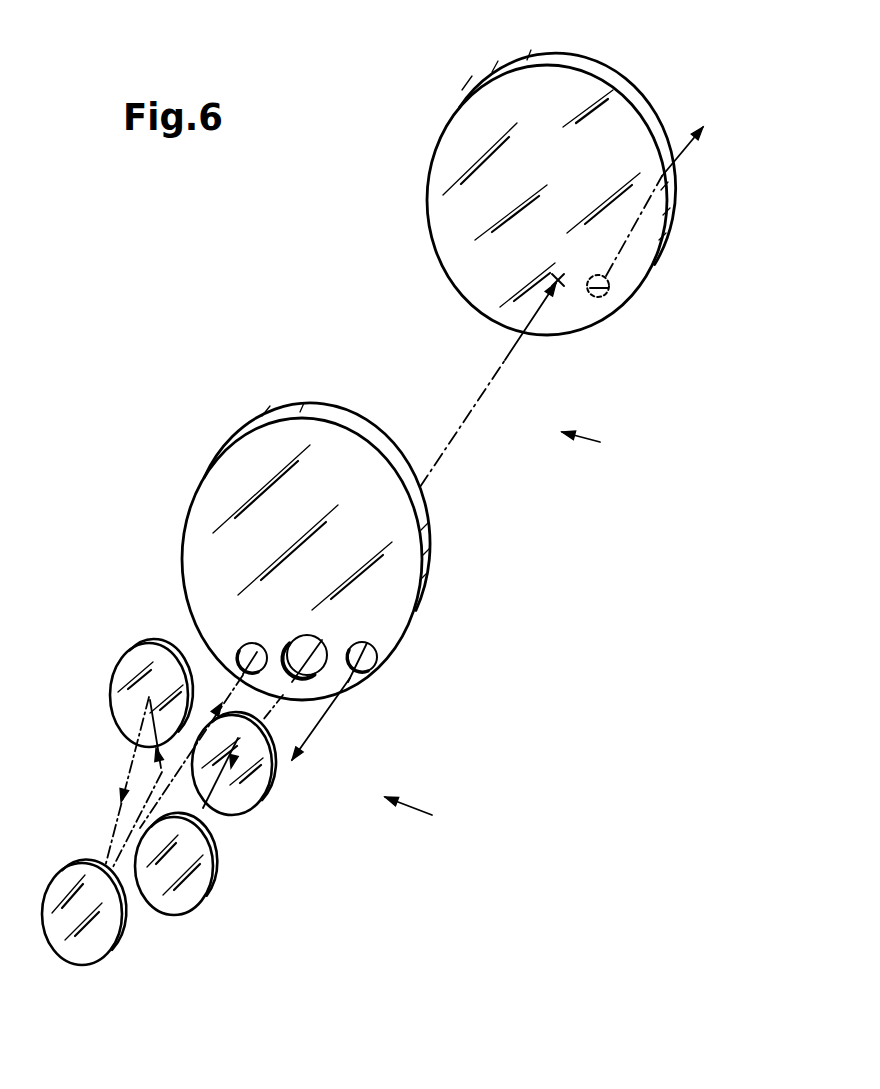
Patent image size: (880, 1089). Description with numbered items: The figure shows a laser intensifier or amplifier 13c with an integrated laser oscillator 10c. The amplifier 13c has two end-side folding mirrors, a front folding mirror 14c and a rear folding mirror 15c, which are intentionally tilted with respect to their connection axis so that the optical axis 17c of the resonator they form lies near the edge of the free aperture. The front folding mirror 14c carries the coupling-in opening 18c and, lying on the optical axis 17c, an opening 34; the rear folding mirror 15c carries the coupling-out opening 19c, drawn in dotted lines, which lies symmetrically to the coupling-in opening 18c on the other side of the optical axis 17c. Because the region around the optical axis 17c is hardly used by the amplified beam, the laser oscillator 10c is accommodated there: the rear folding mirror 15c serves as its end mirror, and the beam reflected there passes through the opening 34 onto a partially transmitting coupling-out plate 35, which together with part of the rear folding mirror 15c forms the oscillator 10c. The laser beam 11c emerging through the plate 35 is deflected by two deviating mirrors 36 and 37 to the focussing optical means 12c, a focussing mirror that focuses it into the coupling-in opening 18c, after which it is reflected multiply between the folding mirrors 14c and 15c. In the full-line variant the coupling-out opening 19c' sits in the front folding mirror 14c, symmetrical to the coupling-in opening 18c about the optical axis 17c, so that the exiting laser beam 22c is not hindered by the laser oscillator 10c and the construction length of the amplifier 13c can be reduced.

The laser oscillator 10c is at (430, 815).
The laser beam 11c is at (243, 668).
The focussing optical means 12c is at (95, 963).
The laser intensifier or amplifier 13c is at (604, 445).
The front folding mirror or reflecting means 14c is at (270, 413).
The rear folding mirror or reflecting means 15c is at (440, 127).
The optical axis 17c is at (508, 358).
The coupling-in opening 18c is at (262, 672).
The coupling-out opening 19c is at (645, 224).
The coupling-out opening 19c' is at (418, 675).
The laser beam 22c is at (334, 699).
The opening 34 is at (305, 642).
The partially transmitting coupling-out plate 35 is at (270, 795).
The deviating mirror or reflecting means 36 is at (133, 855).
The deviating mirror or reflecting means 37 is at (118, 671).